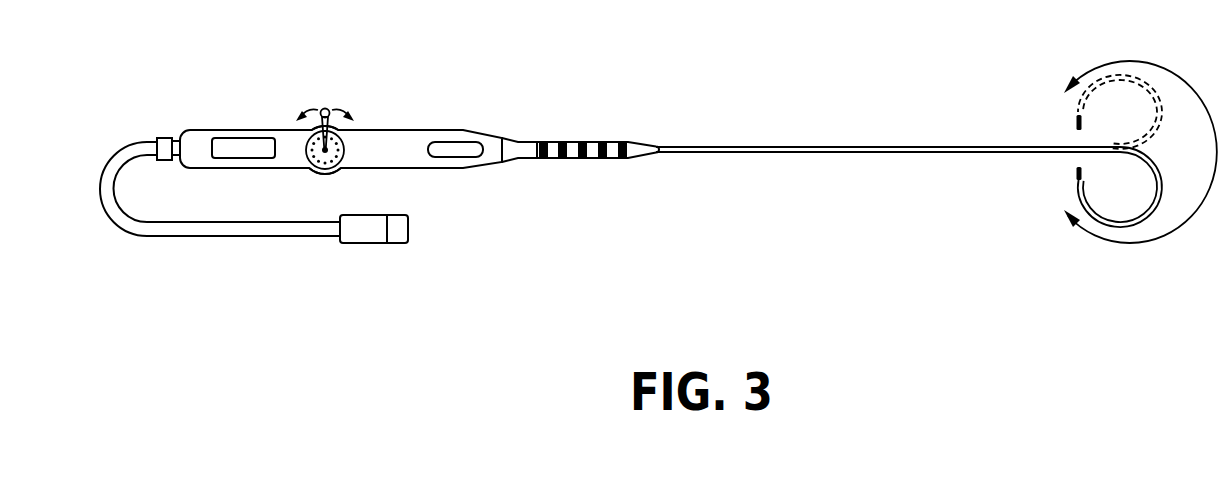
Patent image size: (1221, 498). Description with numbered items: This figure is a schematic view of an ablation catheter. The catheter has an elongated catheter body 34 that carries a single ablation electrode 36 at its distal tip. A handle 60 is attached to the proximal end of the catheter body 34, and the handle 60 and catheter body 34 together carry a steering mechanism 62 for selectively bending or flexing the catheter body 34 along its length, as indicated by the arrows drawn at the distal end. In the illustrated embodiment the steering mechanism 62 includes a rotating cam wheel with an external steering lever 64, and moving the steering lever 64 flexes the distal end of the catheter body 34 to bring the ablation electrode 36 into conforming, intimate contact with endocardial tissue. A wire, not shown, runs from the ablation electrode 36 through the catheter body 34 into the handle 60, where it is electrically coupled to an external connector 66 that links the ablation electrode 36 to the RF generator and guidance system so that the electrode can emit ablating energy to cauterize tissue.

The catheter body 34 is at (857, 146).
The ablation electrode 36 is at (1077, 175).
The handle 60 is at (418, 153).
The steering mechanism 62 is at (331, 84).
The steering lever 64 is at (345, 143).
The external connector 66 is at (363, 237).